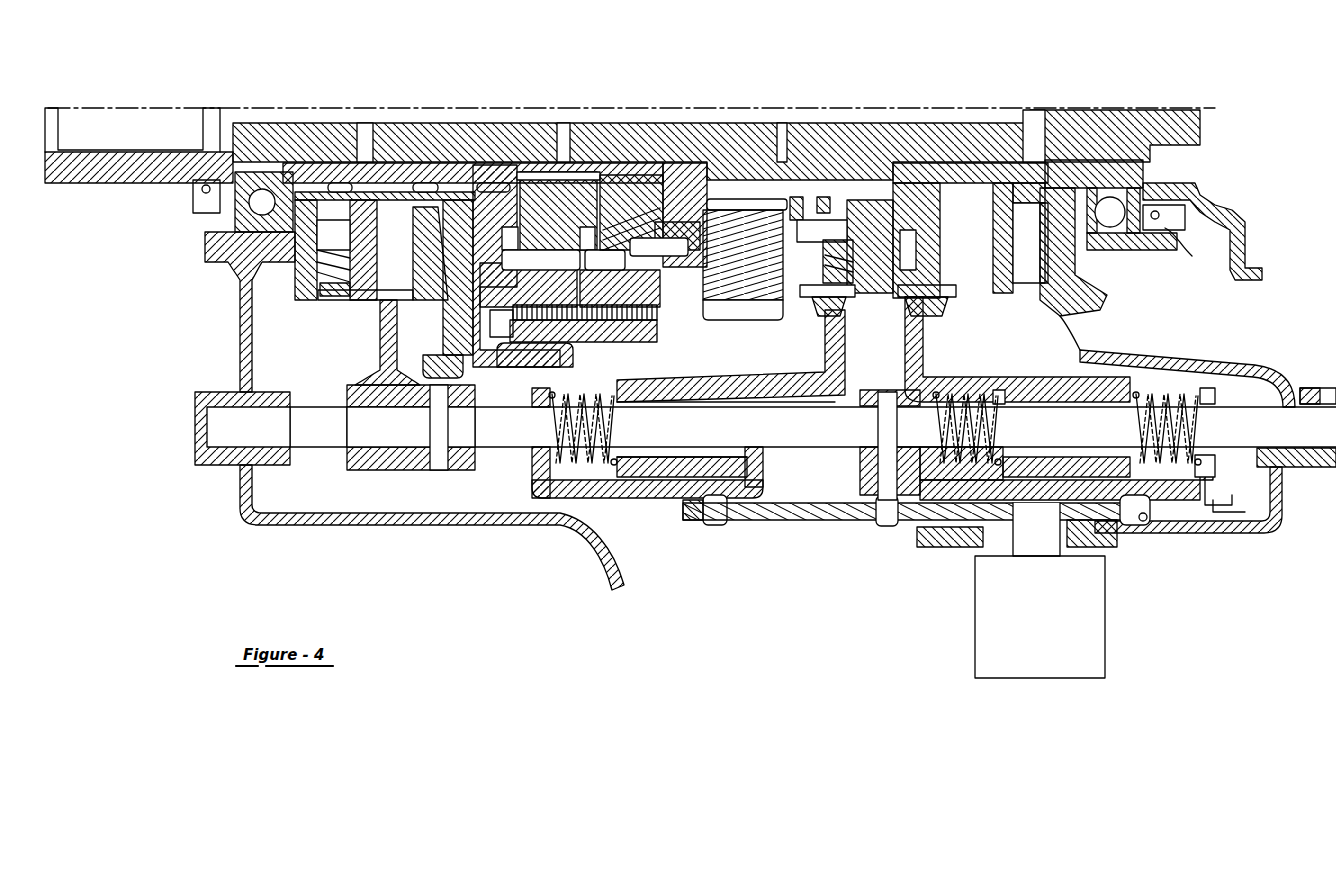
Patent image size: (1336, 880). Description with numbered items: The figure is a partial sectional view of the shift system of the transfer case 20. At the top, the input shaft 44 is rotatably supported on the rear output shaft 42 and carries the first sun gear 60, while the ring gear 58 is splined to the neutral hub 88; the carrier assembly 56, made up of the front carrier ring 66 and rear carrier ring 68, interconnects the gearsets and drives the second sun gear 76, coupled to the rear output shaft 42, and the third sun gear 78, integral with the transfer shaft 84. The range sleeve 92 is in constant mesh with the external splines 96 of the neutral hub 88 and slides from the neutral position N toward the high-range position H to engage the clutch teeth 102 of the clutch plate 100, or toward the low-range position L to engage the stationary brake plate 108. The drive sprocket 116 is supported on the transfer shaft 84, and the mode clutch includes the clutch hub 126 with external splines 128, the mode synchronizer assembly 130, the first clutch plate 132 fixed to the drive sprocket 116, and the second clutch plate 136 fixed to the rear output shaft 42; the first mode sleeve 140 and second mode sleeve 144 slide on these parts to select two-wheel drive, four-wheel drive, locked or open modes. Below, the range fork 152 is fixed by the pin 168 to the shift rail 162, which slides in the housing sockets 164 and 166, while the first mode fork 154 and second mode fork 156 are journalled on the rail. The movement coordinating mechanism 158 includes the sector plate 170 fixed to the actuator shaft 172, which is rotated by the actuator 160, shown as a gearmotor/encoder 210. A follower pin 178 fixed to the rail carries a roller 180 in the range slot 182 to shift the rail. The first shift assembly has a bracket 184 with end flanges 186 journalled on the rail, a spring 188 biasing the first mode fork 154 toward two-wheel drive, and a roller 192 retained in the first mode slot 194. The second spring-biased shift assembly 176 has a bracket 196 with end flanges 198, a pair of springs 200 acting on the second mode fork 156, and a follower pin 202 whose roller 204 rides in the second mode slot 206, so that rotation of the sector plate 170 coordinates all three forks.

The transfer case 20 is at (738, 55).
The rear output shaft 42 is at (523, 123).
The input shaft 44 is at (118, 168).
The carrier assembly 56 is at (661, 318).
The ring gear 58 is at (552, 352).
The first sun gear 60 is at (566, 210).
The front carrier ring 66 is at (551, 299).
The rear carrier ring 68 is at (621, 301).
The second sun gear 76 is at (632, 217).
The third sun gear 78 is at (691, 223).
The transfer shaft 84 is at (742, 186).
The neutral hub 88 is at (345, 195).
The range sleeve 92 is at (417, 305).
The external splines 96 is at (330, 305).
The clutch plate 100 is at (310, 253).
The external clutch teeth 102 is at (312, 303).
The brake plate 108 is at (428, 215).
The drive sprocket 116 is at (754, 251).
The clutch hub 126 is at (905, 200).
The external splines 128 is at (871, 318).
The mode synchronizer assembly 130 is at (822, 224).
The first clutch plate 132 is at (824, 261).
The second clutch plate 136 is at (940, 178).
The first mode sleeve 140 is at (815, 320).
The second mode sleeve 144 is at (936, 302).
The range fork 152 is at (377, 463).
The first mode fork 154 is at (641, 385).
The second mode fork 156 is at (1000, 393).
The movement coordinating mechanism 158 is at (633, 522).
The actuator 160 is at (1105, 632).
The shift rail 162 is at (320, 443).
The housing socket 164 is at (234, 430).
The housing socket 166 is at (1310, 393).
The pin 168 is at (440, 468).
The sector plate 170 is at (782, 520).
The actuator shaft 172 is at (1046, 553).
The second spring-biased shift assembly 176 is at (1221, 489).
The follower pin 178 is at (888, 394).
The roller 180 is at (900, 522).
The range slot 182 is at (876, 514).
The bracket 184 is at (567, 494).
The end flanges 186 is at (540, 473).
The spring 188 is at (597, 400).
The roller 192 is at (722, 526).
The first mode slot 194 is at (706, 524).
The bracket 196 is at (1235, 518).
The end flanges 198 is at (926, 395).
The springs 200 is at (978, 390).
The follower pin 202 is at (1168, 500).
The roller 204 is at (1124, 520).
The second mode slot 206 is at (1145, 522).
The gearmotor/encoder 210 is at (1034, 643).
The high-range position line H is at (336, 300).
The neutral position line N is at (363, 300).
The low-range position line L is at (392, 338).